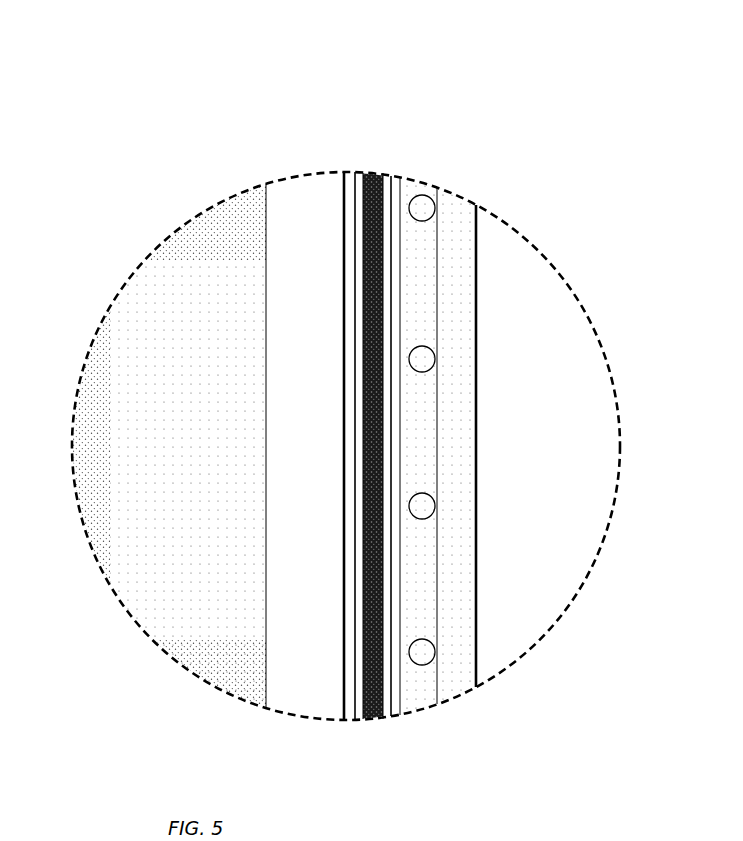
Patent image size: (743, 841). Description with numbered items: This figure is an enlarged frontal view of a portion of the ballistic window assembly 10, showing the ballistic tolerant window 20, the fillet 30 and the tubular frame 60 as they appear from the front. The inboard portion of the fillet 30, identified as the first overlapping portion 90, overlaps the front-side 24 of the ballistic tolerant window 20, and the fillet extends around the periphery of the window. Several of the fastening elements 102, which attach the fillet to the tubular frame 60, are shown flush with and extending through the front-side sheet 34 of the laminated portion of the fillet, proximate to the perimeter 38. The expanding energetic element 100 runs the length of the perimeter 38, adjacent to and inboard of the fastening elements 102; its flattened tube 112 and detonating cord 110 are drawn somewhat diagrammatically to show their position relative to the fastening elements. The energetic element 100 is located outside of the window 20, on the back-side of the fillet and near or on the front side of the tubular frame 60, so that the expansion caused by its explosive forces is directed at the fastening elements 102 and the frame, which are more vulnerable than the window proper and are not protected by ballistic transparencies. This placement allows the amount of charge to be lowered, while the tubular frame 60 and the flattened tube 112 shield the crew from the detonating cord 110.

The glass laminate structure 10 is at (574, 128).
The ballistic tolerant window 20 is at (200, 396).
The front-side of the ballistic tolerant window 24 is at (231, 235).
The fillet 30 is at (426, 316).
The front-side sheet of the fillet 34 is at (423, 247).
The perimeter 38 is at (438, 289).
The tubular frame 60 is at (480, 373).
The first overlapping portion 90 is at (320, 220).
The expanding energetic element 100 is at (394, 292).
The fastening elements 102 is at (431, 368).
The detonating cord 110 is at (385, 186).
The flattened tube 112 is at (356, 190).